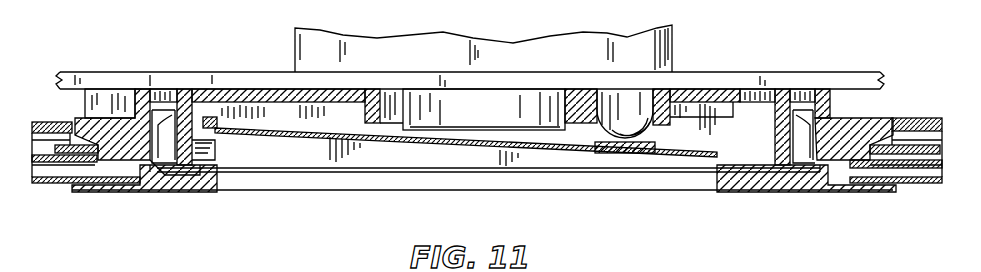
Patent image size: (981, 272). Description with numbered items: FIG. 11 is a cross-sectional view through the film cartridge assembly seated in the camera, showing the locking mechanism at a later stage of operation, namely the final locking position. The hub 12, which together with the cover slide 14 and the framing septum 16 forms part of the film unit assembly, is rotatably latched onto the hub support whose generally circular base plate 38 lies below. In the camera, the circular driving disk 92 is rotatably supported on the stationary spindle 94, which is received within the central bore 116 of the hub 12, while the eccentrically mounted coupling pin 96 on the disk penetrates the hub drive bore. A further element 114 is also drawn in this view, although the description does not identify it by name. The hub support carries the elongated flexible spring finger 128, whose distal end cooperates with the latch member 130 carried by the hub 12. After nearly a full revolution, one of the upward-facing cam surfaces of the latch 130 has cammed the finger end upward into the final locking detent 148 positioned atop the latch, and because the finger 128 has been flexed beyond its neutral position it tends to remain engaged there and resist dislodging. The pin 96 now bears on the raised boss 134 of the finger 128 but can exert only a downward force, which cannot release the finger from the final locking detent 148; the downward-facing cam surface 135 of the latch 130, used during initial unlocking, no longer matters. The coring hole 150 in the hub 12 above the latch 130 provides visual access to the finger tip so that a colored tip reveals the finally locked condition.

The hub 12 is at (220, 80).
The cover slide 14 is at (68, 145).
The framing septum 16 is at (50, 163).
The base plate 38 is at (140, 192).
The driving disk 92 is at (795, 72).
The spindle 94 is at (490, 115).
The coupling pin 96 is at (637, 120).
The spacer block 114 is at (110, 105).
The central bore 116 is at (650, 100).
The spring finger 128 is at (388, 150).
The latch member 130 is at (232, 155).
The raised boss 134 is at (602, 150).
The downward-facing cam surface 135 is at (213, 167).
The final locking detent 148 is at (213, 122).
The coring hole 150 is at (218, 97).